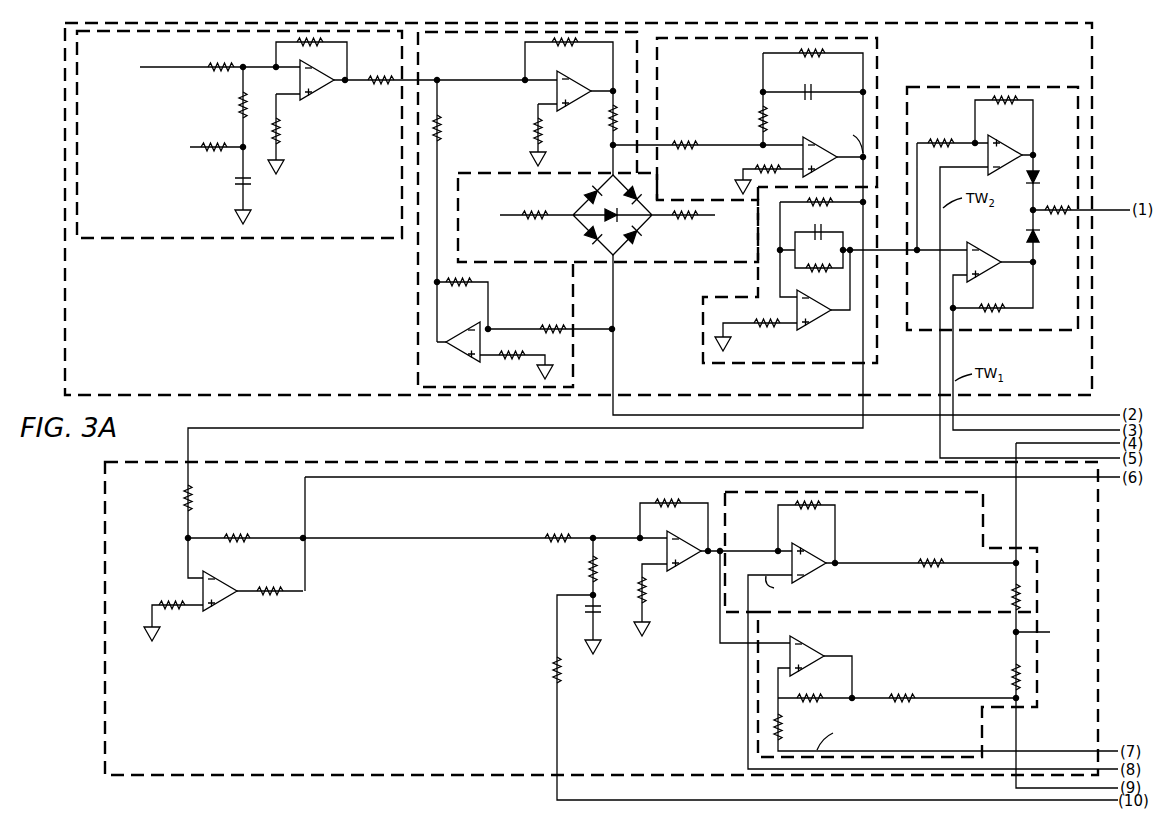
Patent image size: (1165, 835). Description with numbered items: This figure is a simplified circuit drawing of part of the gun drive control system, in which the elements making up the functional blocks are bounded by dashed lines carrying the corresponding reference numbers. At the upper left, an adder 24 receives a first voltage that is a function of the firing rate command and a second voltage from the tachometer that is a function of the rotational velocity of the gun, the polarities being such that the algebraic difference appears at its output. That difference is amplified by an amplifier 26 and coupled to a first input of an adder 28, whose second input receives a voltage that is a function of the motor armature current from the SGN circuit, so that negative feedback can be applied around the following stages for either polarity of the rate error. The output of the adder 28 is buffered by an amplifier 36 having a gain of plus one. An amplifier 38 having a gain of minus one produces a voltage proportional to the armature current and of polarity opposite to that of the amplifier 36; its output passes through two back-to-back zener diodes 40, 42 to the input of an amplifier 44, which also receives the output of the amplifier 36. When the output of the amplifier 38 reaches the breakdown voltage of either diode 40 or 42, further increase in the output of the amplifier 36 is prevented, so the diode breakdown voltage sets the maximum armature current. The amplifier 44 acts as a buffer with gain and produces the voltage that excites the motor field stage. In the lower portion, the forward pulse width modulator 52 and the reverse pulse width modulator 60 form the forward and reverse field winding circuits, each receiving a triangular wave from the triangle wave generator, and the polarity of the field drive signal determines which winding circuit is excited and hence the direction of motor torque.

The adder 24 is at (257, 134).
The amplifier 26 is at (221, 144).
The adder 28 is at (524, 211).
The amplifier 36 is at (598, 190).
The amplifier 38 is at (590, 209).
The zener diode 40 is at (608, 217).
The zener diode 42 is at (654, 230).
The amplifier 44 is at (706, 82).
The forward pulse width modulator 52 is at (884, 539).
The reverse pulse width modulator 60 is at (894, 654).